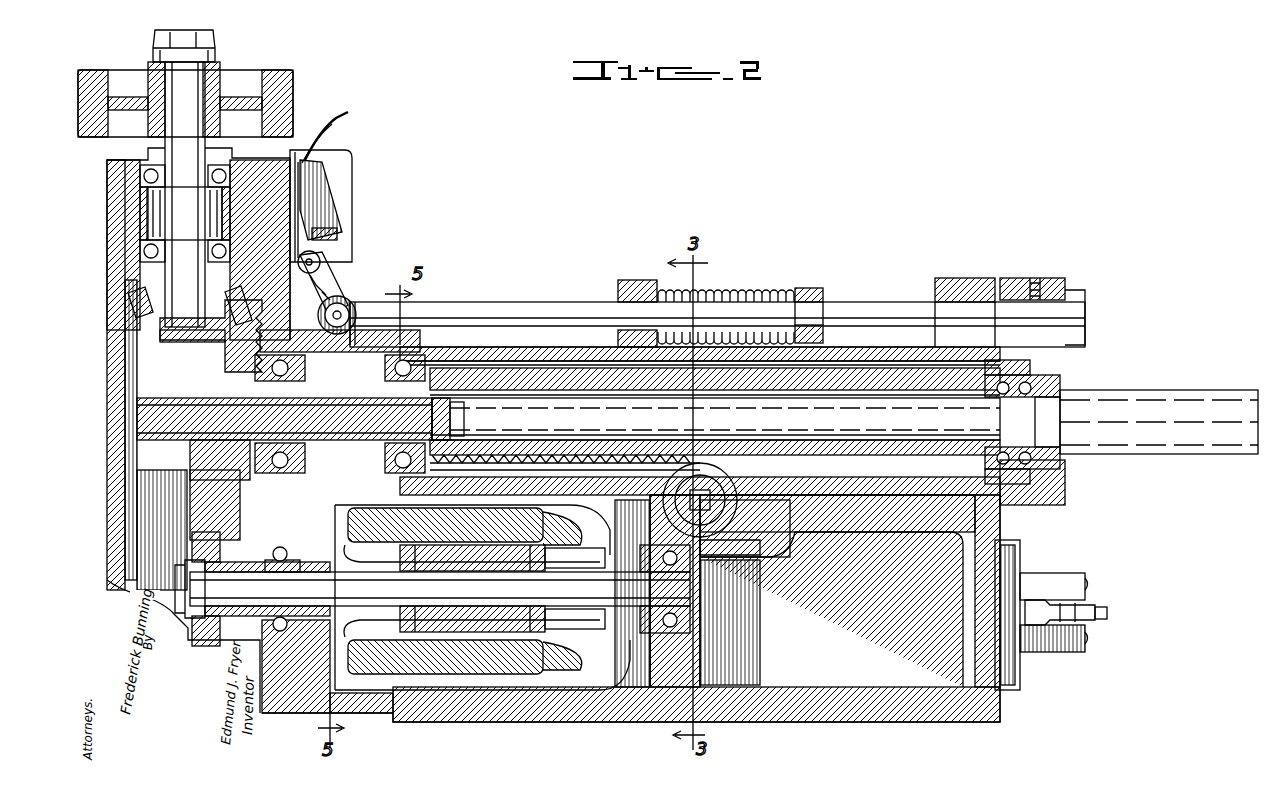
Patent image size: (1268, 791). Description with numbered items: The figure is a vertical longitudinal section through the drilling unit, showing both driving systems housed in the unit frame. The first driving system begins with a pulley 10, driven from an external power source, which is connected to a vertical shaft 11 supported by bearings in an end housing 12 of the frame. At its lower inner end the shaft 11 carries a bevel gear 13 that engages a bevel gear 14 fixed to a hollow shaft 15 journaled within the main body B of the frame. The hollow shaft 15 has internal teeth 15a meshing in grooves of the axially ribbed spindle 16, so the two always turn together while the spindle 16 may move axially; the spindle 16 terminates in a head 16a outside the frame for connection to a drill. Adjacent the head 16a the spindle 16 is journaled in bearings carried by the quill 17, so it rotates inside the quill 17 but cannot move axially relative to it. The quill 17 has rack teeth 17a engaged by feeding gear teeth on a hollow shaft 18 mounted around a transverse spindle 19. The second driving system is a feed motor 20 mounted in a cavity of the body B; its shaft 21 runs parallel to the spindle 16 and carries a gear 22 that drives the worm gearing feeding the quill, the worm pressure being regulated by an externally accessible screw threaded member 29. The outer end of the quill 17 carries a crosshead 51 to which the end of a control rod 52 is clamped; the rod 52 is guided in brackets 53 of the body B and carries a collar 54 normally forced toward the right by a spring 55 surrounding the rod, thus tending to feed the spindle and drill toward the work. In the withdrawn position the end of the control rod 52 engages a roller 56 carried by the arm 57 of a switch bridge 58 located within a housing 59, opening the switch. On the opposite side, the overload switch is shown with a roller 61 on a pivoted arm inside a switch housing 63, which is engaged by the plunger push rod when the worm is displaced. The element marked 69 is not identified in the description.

The pulley 10 is at (293, 107).
The vertical shaft 11 is at (168, 211).
The end housing 12 is at (123, 244).
The bevel gear 13 is at (130, 318).
The bevel gear 14 is at (238, 352).
The hollow shaft 15 is at (385, 340).
The internal teeth 15a is at (452, 418).
The spindle 16 is at (137, 431).
The head 16a is at (1146, 400).
The quill 17 is at (900, 376).
The rack teeth 17a is at (520, 447).
The hollow shaft 18 is at (763, 535).
The transverse spindle 19 is at (738, 530).
The feed motor 20 is at (468, 655).
The shaft 21 is at (505, 598).
The gear 22 is at (205, 532).
The screw threaded member 29 is at (1040, 660).
The crosshead 51 is at (1040, 505).
The control rod 52 is at (958, 310).
The brackets 53 is at (640, 280).
The collar 54 is at (816, 288).
The spring 55 is at (756, 294).
The roller 56 is at (385, 300).
The arm 57 is at (350, 265).
The switch bridge 58 is at (338, 236).
The housing 59 is at (345, 180).
The roller 61 is at (1107, 612).
The switch housing 63 is at (1065, 578).
The roller 69 is at (347, 300).
The main body B is at (345, 285).